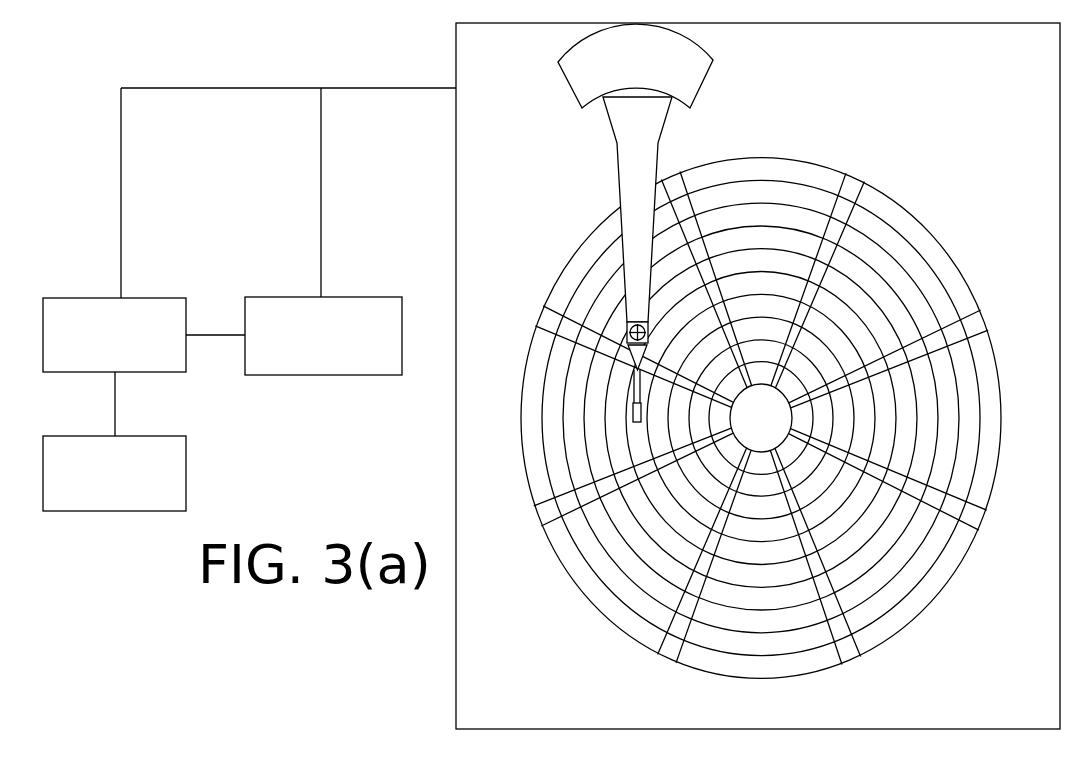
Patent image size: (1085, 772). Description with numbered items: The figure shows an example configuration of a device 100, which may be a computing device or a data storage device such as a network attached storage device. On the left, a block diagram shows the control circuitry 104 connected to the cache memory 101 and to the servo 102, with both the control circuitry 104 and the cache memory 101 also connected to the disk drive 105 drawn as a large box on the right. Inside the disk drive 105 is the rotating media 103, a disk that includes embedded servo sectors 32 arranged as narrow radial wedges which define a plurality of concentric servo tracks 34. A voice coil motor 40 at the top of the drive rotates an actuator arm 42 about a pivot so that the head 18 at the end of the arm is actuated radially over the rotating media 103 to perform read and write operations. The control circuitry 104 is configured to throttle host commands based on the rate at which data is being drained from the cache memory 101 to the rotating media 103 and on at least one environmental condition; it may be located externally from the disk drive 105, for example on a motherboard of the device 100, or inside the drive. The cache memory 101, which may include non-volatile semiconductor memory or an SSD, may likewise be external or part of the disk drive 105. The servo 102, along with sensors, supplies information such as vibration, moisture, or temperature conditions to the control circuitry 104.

The device 100 is at (50, 139).
The cache memory 101 is at (362, 297).
The servo 102 is at (150, 436).
The rotating media 103 is at (528, 343).
The control circuitry 104 is at (59, 298).
The disk drive 105 is at (456, 195).
The head 18 is at (652, 412).
The servo sectors 32 is at (858, 180).
The servo tracks 34 is at (772, 170).
The voice coil motor 40 is at (582, 100).
The actuator arm 42 is at (617, 192).